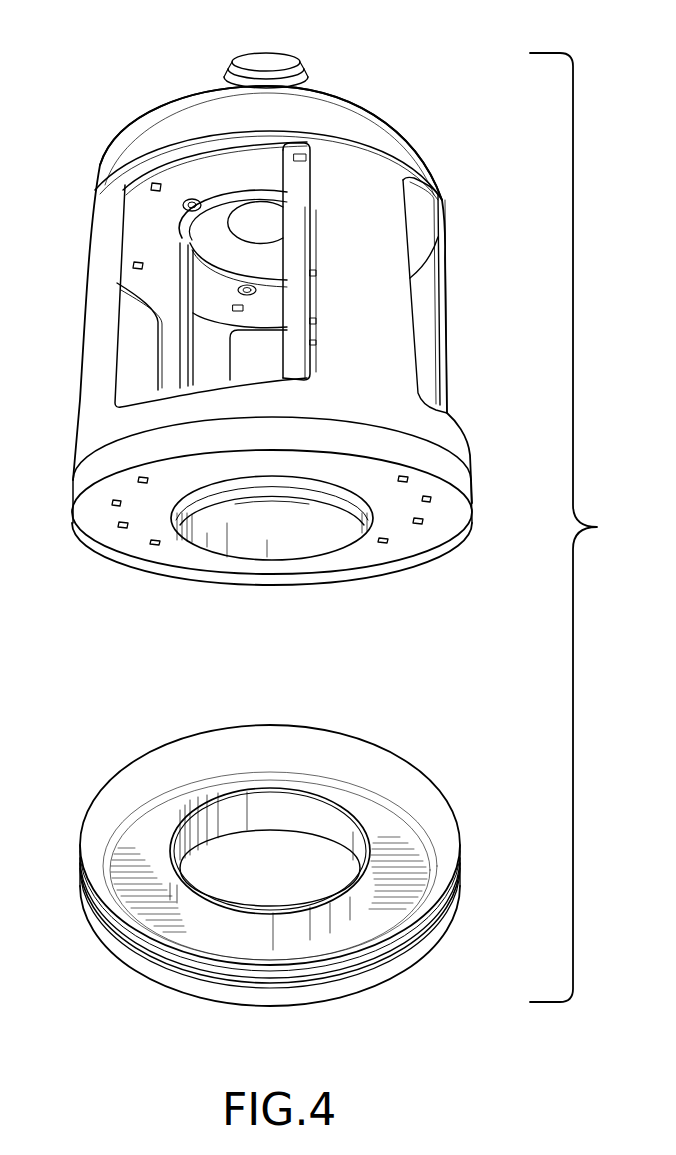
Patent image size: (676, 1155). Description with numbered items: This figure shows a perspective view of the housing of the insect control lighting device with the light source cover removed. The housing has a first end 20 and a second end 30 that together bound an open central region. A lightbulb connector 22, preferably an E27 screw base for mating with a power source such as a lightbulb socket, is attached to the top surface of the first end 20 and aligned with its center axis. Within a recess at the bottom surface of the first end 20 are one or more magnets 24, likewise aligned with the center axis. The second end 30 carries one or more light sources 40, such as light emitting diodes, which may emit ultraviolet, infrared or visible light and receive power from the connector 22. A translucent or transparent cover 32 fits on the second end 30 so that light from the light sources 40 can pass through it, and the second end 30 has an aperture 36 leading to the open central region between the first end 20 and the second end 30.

The first end 20 is at (163, 118).
The lightbulb connector 22 is at (293, 72).
The magnets 24 is at (265, 208).
The second end 30 is at (457, 445).
The cover 32 is at (188, 762).
The aperture 36 is at (333, 535).
The light sources 40 is at (151, 187).